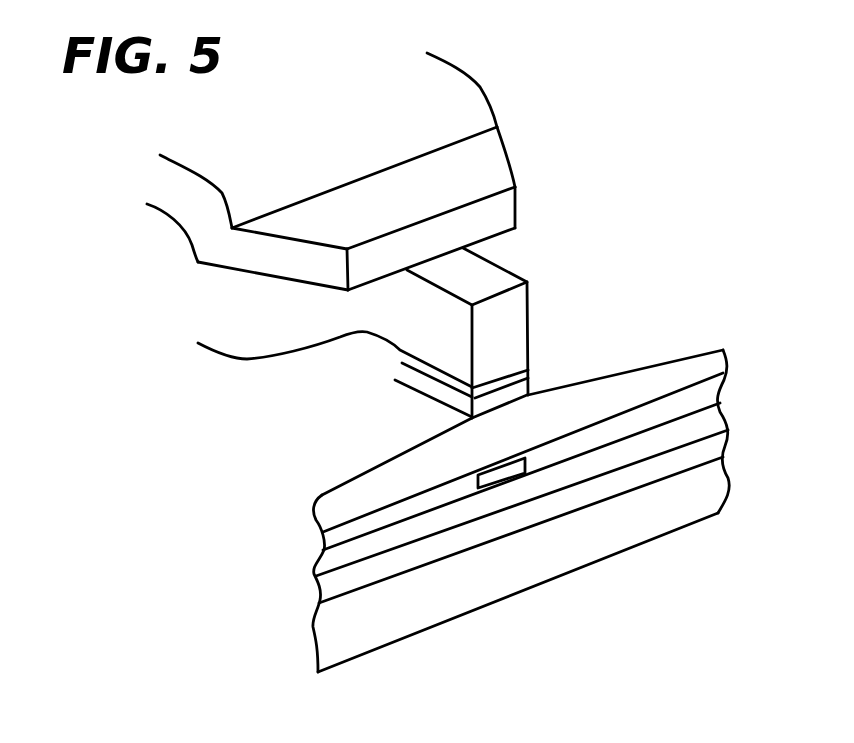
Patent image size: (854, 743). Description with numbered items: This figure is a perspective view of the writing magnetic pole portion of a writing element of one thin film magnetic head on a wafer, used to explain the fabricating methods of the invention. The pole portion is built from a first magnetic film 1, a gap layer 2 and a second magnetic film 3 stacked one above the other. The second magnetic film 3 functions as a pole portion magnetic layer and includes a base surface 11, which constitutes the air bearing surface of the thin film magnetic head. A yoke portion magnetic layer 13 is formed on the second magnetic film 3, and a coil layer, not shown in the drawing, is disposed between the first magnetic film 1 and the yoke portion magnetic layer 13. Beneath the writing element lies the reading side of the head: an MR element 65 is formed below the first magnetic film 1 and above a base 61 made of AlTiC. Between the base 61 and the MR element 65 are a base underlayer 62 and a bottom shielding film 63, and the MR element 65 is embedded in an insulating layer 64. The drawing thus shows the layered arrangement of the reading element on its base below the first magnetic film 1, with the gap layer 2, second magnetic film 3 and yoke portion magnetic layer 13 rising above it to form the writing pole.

The first magnetic film 1 is at (469, 479).
The gap layer 2 is at (513, 380).
The second magnetic film 3 is at (516, 323).
The base surface 11 is at (493, 328).
The yoke portion magnetic layer 13 is at (447, 85).
The base 61 is at (628, 523).
The base underlayer 62 is at (343, 587).
The bottom shielding film 63 is at (342, 565).
The insulating layer 64 is at (343, 534).
The MR element 65 is at (478, 482).